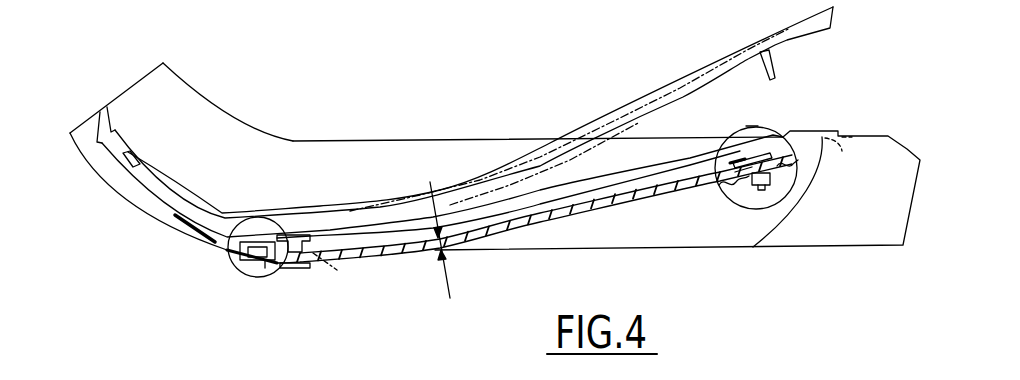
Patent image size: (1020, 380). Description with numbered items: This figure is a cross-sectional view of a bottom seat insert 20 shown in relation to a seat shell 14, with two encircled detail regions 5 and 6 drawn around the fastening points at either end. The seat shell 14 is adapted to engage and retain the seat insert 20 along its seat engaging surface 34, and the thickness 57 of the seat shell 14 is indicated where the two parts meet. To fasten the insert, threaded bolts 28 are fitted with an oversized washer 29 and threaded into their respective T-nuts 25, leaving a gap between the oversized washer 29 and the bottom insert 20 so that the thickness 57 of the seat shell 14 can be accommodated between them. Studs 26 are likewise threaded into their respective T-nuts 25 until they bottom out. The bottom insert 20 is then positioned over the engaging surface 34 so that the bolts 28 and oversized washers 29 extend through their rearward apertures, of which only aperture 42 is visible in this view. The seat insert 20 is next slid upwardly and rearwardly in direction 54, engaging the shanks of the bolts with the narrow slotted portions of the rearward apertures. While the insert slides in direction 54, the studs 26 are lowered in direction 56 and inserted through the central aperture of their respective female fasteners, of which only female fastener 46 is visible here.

The first end detail 5 is at (233, 268).
The second end detail 6 is at (730, 208).
The seat shell 14 is at (468, 99).
The seat insert 20 is at (810, 134).
The T-nuts 25 is at (745, 50).
The studs 26 is at (760, 192).
The threaded bolts 28 is at (292, 276).
The oversized washer 29 is at (312, 280).
The seat engaging surface 34 is at (568, 210).
The rearward aperture 42 is at (340, 272).
The female fastener 46 is at (745, 167).
The upward sliding direction 54 is at (162, 151).
The lowering direction 56 is at (751, 121).
The thickness of seat shell 57 is at (455, 250).